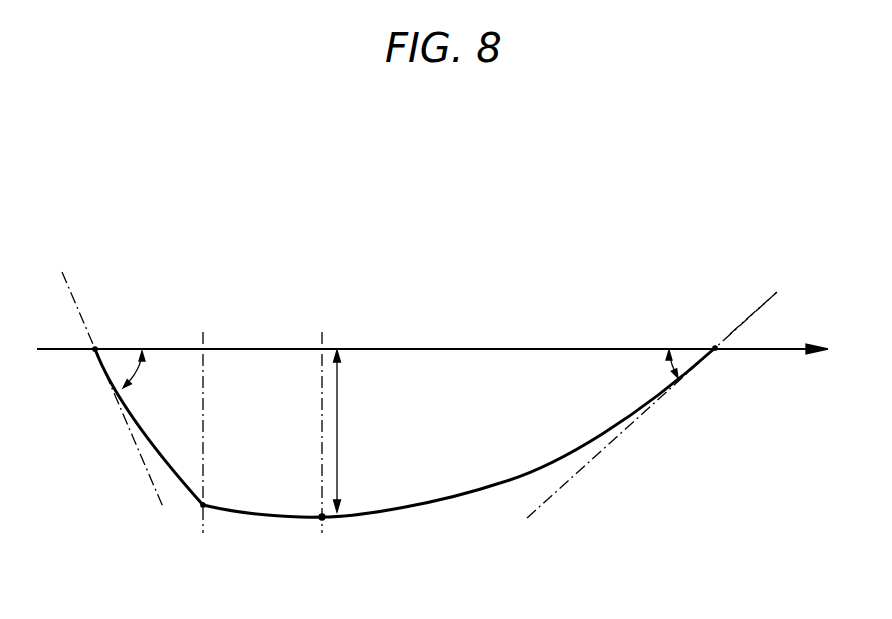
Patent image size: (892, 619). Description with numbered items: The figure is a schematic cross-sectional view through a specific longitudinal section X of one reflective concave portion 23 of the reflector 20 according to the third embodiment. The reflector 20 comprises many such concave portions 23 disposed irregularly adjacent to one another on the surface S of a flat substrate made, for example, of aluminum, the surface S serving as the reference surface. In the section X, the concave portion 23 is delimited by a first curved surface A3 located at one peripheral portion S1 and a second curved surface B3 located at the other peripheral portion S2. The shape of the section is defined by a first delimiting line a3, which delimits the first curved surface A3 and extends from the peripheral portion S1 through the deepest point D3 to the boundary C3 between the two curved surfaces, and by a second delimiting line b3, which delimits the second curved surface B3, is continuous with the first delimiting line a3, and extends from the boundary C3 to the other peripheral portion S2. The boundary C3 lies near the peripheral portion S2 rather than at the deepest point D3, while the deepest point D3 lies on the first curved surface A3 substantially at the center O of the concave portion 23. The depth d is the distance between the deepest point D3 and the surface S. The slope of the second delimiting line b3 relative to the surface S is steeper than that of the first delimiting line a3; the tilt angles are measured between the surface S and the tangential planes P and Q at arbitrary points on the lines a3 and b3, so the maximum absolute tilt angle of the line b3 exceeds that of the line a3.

The reflector 20 is at (426, 368).
The reflective concave portion 23 is at (607, 416).
The specific longitudinal section X is at (433, 335).
The center of the concave portion O is at (335, 424).
The tangential plane Q is at (80, 318).
The tangential plane P is at (610, 442).
The surface of the substrate S is at (763, 347).
The one peripheral portion S1 is at (714, 346).
The other peripheral portion S2 is at (100, 347).
The boundary between the first and second curved surfaces C3 is at (203, 506).
The deepest point D3 is at (322, 518).
The first curved surface A3 is at (468, 489).
The second curved surface B3 is at (163, 458).
The first delimiting line a3 is at (563, 459).
The second delimiting line b3 is at (137, 430).
The depth of the concave portion d is at (348, 431).